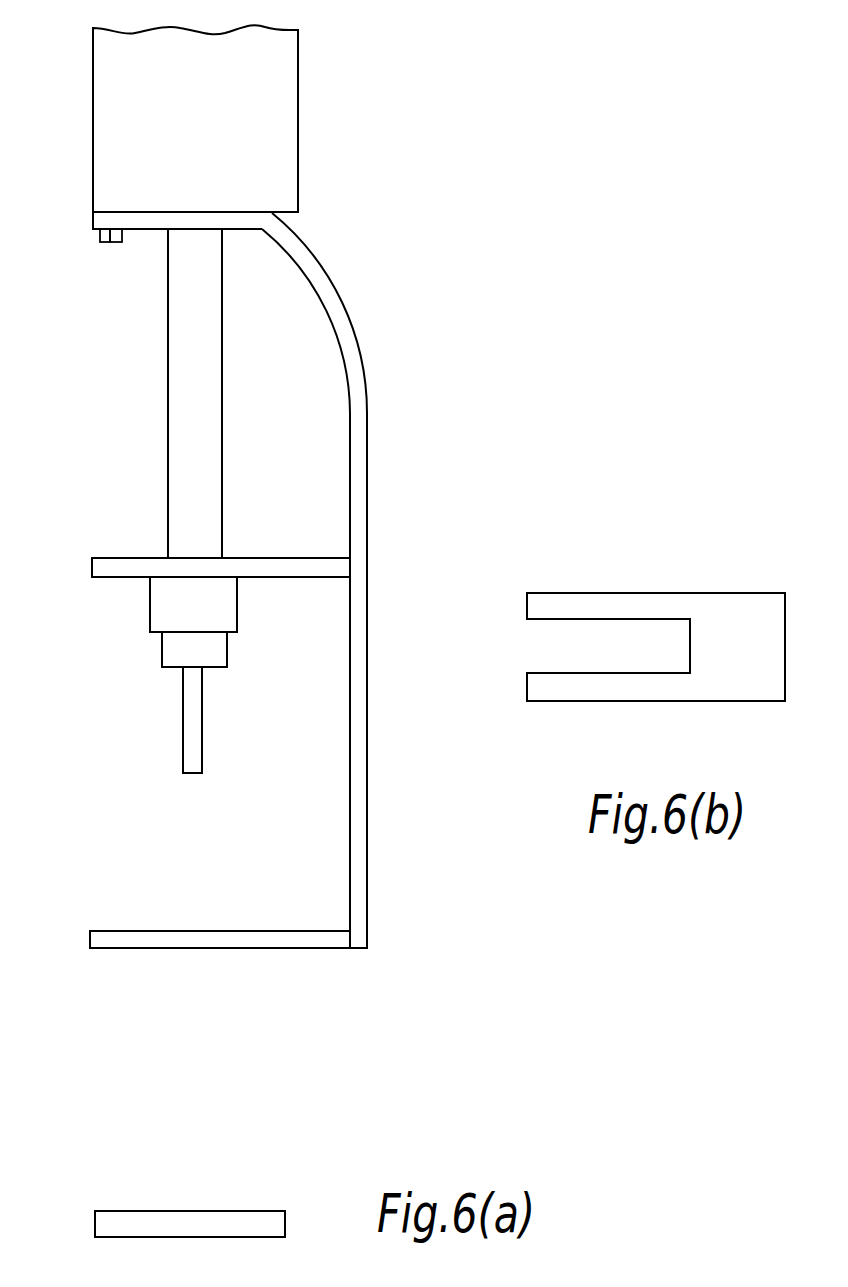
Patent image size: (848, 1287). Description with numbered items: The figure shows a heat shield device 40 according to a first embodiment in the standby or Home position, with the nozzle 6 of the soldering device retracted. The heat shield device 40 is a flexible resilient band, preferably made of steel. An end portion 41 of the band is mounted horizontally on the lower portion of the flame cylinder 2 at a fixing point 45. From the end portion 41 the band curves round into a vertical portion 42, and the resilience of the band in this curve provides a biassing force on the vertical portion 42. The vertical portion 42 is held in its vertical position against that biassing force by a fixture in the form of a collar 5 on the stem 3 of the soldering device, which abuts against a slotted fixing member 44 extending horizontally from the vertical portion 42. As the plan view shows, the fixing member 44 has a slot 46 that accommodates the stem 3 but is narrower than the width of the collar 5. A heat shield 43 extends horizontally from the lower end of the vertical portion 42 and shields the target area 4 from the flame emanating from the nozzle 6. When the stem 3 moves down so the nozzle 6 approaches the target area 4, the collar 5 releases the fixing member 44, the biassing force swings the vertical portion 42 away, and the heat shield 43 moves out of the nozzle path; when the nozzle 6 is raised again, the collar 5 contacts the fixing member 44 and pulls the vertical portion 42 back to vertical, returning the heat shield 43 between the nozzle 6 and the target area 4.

In FIG. 6A, the flame cylinder 2 is at (120, 121).
In FIG. 6A, the stem 3 is at (176, 416).
In FIG. 6A, the target area 4 is at (236, 1216).
In FIG. 6A, the collar 5 is at (160, 603).
In FIG. 6A, the nozzle 6 is at (170, 655).
In FIG. 6A, the heat shield device 40 is at (363, 383).
In FIG. 6A, the end portion 41 is at (147, 232).
In FIG. 6A, the vertical portion 42 is at (358, 783).
In FIG. 6A, the heat shield 43 is at (290, 940).
In FIG. 6A, the slotted fixing member 44 is at (292, 572).
In FIG. 6B, the slotted fixing member 44 is at (675, 690).
In FIG. 6A, the fixing point 45 is at (100, 236).
In FIG. 6B, the slot 46 is at (570, 622).